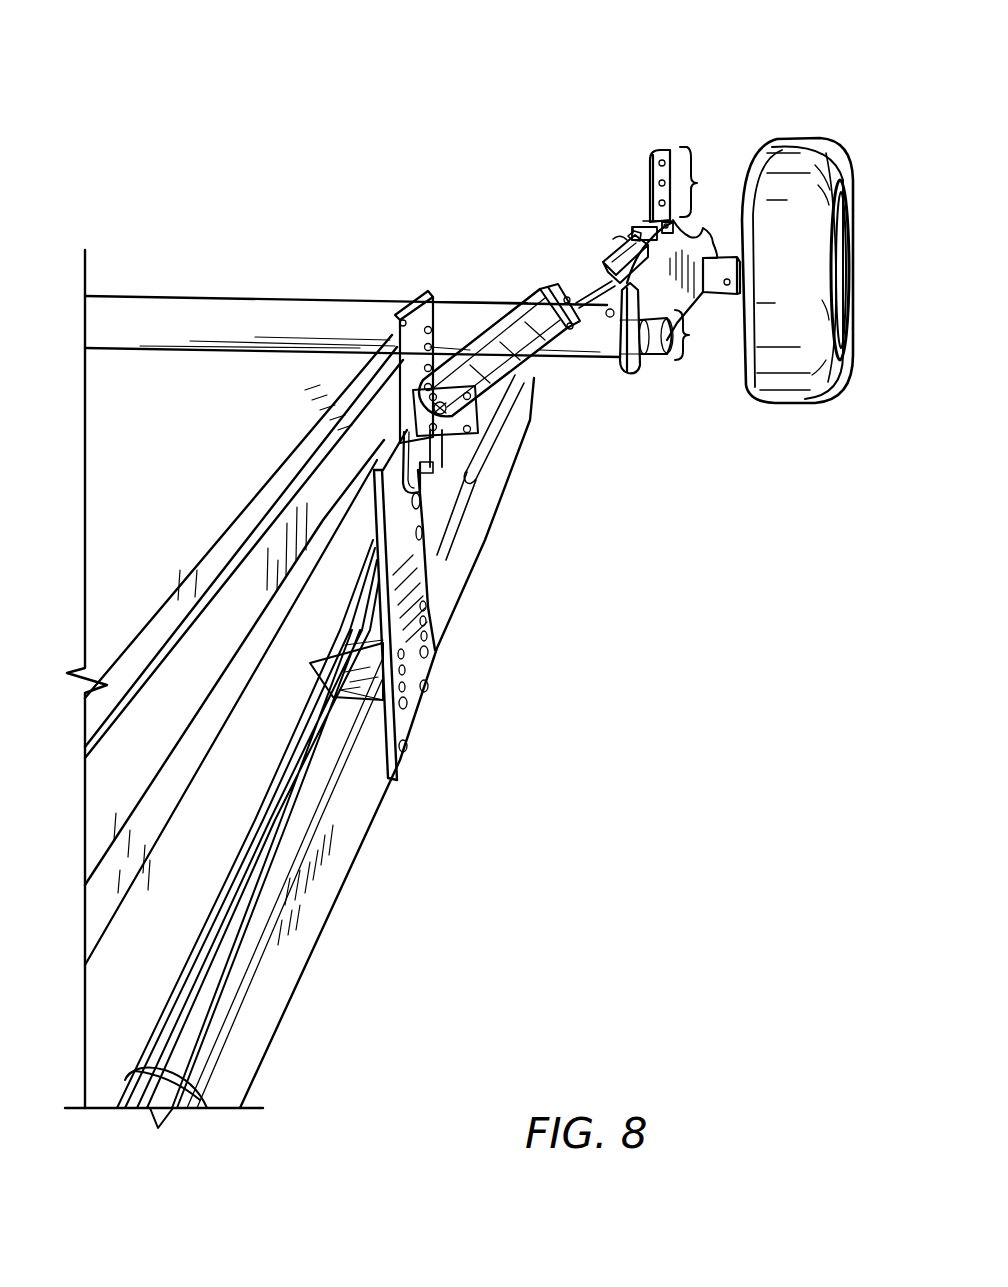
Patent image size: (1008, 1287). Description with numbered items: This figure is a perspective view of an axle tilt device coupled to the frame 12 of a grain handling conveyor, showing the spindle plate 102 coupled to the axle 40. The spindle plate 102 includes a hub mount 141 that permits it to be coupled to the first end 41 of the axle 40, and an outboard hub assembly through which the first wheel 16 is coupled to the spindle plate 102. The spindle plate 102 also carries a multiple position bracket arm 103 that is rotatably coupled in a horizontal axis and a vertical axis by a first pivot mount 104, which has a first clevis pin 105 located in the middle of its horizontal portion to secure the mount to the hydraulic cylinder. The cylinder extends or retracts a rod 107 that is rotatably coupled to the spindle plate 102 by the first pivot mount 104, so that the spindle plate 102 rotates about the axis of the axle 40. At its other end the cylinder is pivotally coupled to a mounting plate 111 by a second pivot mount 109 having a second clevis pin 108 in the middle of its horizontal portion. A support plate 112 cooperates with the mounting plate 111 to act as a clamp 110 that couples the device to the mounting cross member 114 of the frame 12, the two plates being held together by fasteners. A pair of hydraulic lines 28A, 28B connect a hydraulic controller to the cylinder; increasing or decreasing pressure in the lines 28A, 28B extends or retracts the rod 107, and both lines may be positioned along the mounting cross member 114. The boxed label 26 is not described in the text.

The frame 12 is at (145, 586).
The first wheel 16 is at (830, 112).
The ground surface 26 is at (164, 716).
The hydraulic line 28A is at (428, 400).
The hydraulic line 28B is at (523, 295).
The axle 40 is at (183, 307).
The first end 41 is at (657, 352).
The spindle plate 102 is at (688, 310).
The multiple position bracket arm 103 is at (700, 183).
The first pivot mount 104 is at (630, 240).
The first clevis pin 105 is at (637, 222).
The rod 107 is at (603, 268).
The second clevis pin 108 is at (393, 348).
The second pivot mount 109 is at (478, 485).
The clamp 110 is at (413, 803).
The mounting plate 111 is at (413, 712).
The support plate 112 is at (315, 660).
The mounting cross member 114 is at (340, 853).
The hub mount 141 is at (692, 340).